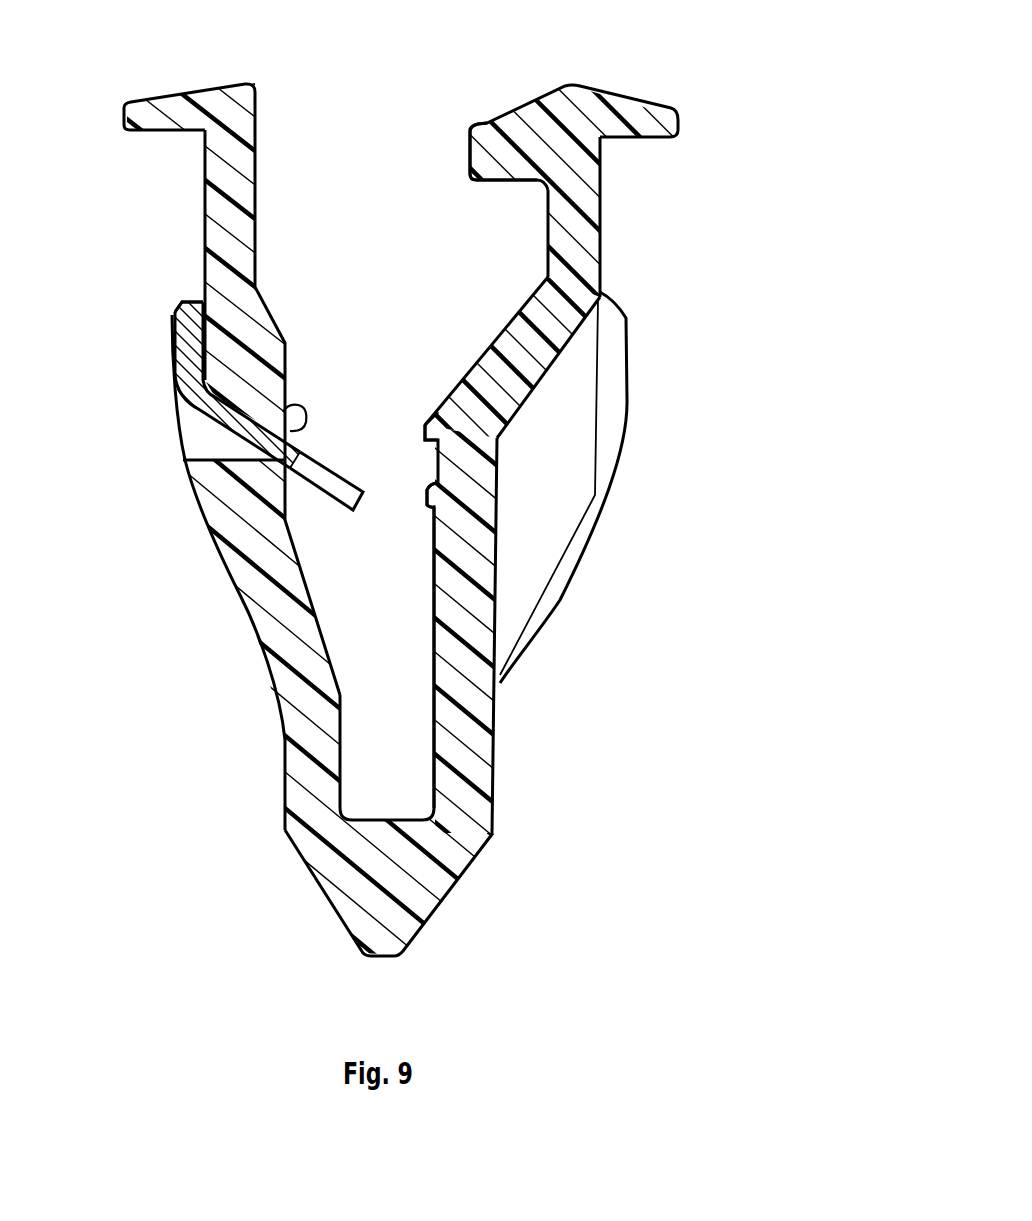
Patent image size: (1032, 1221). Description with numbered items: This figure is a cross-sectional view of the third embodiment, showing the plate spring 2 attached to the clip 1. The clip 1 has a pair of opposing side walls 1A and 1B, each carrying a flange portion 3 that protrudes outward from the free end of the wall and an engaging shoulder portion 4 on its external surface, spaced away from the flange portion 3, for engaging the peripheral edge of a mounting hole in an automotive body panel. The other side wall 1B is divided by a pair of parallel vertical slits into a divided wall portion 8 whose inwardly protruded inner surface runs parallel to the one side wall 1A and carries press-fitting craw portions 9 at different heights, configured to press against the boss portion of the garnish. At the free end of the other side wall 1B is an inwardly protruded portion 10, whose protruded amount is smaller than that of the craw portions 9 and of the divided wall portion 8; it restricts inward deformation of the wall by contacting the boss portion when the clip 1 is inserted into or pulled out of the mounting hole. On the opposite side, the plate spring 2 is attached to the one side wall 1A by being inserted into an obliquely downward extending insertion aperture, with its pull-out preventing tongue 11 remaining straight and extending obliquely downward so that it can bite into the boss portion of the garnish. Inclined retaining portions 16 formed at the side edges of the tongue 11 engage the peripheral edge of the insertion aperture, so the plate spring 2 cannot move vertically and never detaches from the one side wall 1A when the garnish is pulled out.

The clip 1 is at (716, 178).
The one side wall 1A is at (283, 732).
The other side wall 1B is at (503, 673).
The plate spring 2 is at (192, 343).
The flange portion 3 is at (127, 102).
The engaging shoulder portion 4 is at (192, 303).
The divided wall portion 8 is at (490, 337).
The press-fitting craw portion 9 is at (425, 432).
The inwardly protruded portion 10 is at (480, 128).
The pull-out preventing tongue 11 is at (338, 497).
The retaining portion 16 is at (283, 410).